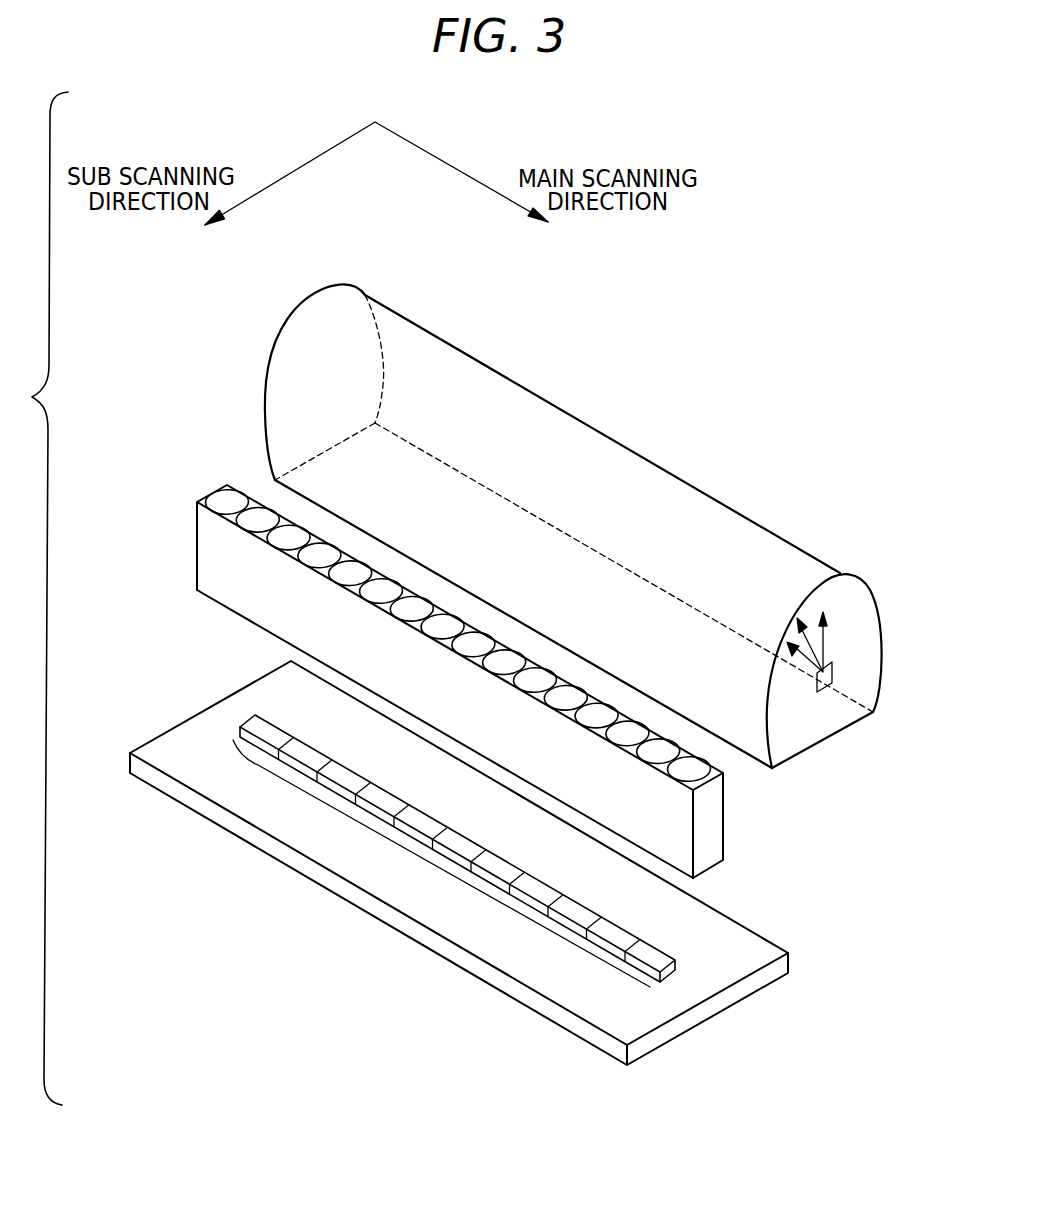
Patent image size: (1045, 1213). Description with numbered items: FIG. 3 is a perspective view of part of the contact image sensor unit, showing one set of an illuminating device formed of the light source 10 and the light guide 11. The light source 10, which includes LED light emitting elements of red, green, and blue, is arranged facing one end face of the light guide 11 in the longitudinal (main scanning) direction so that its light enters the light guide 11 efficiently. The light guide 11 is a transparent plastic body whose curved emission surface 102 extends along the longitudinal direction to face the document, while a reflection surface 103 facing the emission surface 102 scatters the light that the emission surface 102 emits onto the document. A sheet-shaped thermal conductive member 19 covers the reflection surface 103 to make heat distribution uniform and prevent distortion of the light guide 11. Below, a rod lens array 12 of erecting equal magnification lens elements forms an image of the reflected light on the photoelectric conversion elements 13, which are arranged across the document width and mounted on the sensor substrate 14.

The light source 10 is at (830, 675).
The light guide 11 is at (603, 568).
The emission surface 102 is at (758, 534).
The reflection surface 103 is at (847, 730).
The thermal conductive member 19 is at (748, 732).
The rod lens array 12 is at (205, 553).
The photoelectric conversion element 13 is at (437, 868).
The sensor substrate 14 is at (757, 943).